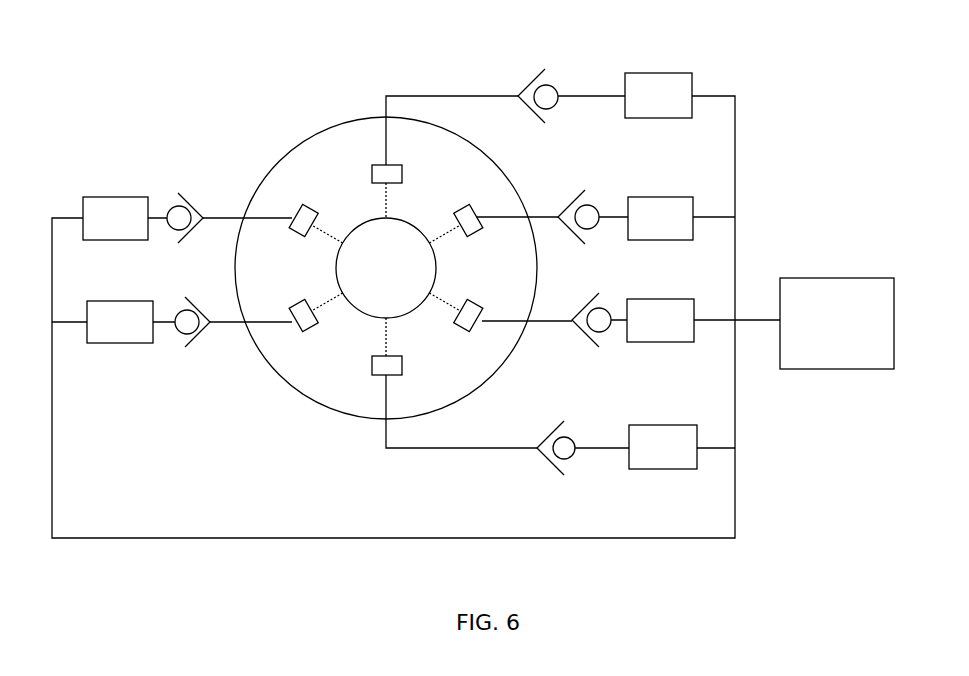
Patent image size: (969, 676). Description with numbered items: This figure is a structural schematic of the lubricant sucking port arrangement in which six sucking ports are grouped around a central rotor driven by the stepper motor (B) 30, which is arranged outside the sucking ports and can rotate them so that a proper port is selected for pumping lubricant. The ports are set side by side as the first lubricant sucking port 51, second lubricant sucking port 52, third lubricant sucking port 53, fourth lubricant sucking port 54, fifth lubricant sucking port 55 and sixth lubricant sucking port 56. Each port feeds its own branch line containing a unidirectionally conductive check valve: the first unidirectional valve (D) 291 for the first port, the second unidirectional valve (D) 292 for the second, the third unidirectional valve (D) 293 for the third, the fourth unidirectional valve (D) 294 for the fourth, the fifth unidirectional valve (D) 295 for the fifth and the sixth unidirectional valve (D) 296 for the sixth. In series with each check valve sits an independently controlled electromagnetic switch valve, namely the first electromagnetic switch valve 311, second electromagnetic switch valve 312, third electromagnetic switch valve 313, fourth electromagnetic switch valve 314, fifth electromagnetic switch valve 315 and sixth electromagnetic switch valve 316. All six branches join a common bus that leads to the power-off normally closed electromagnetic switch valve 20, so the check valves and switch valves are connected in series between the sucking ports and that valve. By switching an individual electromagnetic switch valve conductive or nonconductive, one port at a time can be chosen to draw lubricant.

The power-off normally closed electromagnetic switch valve 20 is at (840, 275).
The stepper motor (B) 30 is at (388, 273).
The first lubricant sucking port 51 is at (371, 178).
The second lubricant sucking port 52 is at (456, 206).
The third lubricant sucking port 53 is at (467, 301).
The fourth lubricant sucking port 54 is at (404, 350).
The fifth lubricant sucking port 55 is at (316, 328).
The sixth lubricant sucking port 56 is at (310, 208).
The first unidirectional valve (D) 291 is at (531, 75).
The second unidirectional valve (D) 292 is at (574, 191).
The third unidirectional valve (D) 293 is at (596, 300).
The fourth unidirectional valve (D) 294 is at (561, 429).
The fifth unidirectional valve (D) 295 is at (186, 301).
The sixth unidirectional valve (D) 296 is at (180, 197).
The first electromagnetic switch valve 311 is at (658, 73).
The second electromagnetic switch valve 312 is at (660, 195).
The third electromagnetic switch valve 313 is at (660, 300).
The fourth electromagnetic switch valve 314 is at (663, 426).
The fifth electromagnetic switch valve 315 is at (120, 299).
The sixth electromagnetic switch valve 316 is at (115, 195).